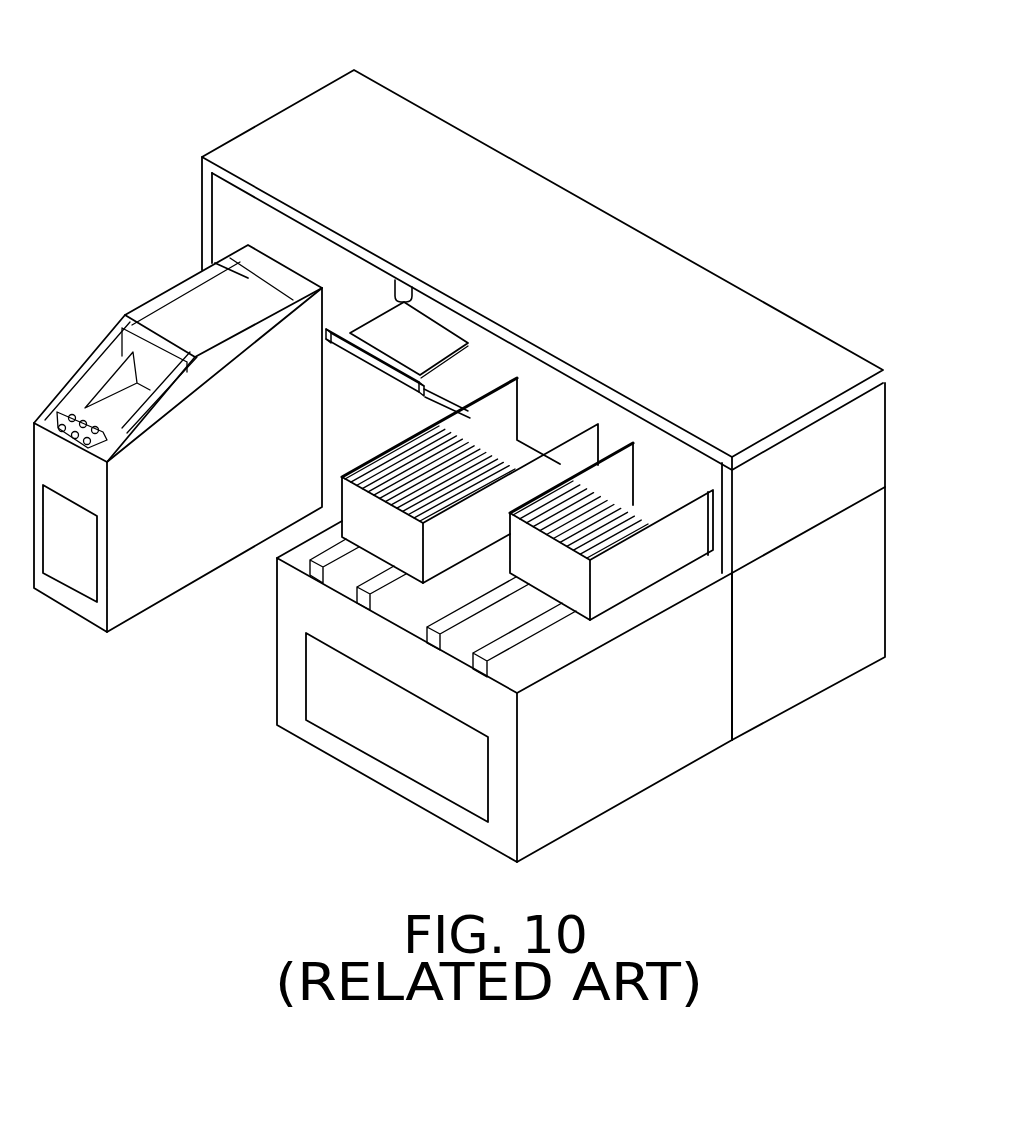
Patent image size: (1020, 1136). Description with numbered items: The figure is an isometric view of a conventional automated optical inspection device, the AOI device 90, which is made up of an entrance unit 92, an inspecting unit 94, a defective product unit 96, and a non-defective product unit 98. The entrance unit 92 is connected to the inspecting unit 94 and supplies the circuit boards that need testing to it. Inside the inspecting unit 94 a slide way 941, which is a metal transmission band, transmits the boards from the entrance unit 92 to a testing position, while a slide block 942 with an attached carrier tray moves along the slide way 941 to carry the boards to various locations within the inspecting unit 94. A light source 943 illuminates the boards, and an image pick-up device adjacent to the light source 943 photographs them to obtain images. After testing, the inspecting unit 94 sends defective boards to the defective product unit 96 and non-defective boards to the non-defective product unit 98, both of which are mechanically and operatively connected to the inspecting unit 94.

The AOI device 90 is at (412, 41).
The entrance unit 92 is at (152, 312).
The inspecting unit 94 is at (393, 185).
The slide way 941 is at (440, 375).
The slide block 942 is at (424, 382).
The light source 943 is at (407, 293).
The defective product unit 96 is at (619, 513).
The non-defective product unit 98 is at (505, 445).